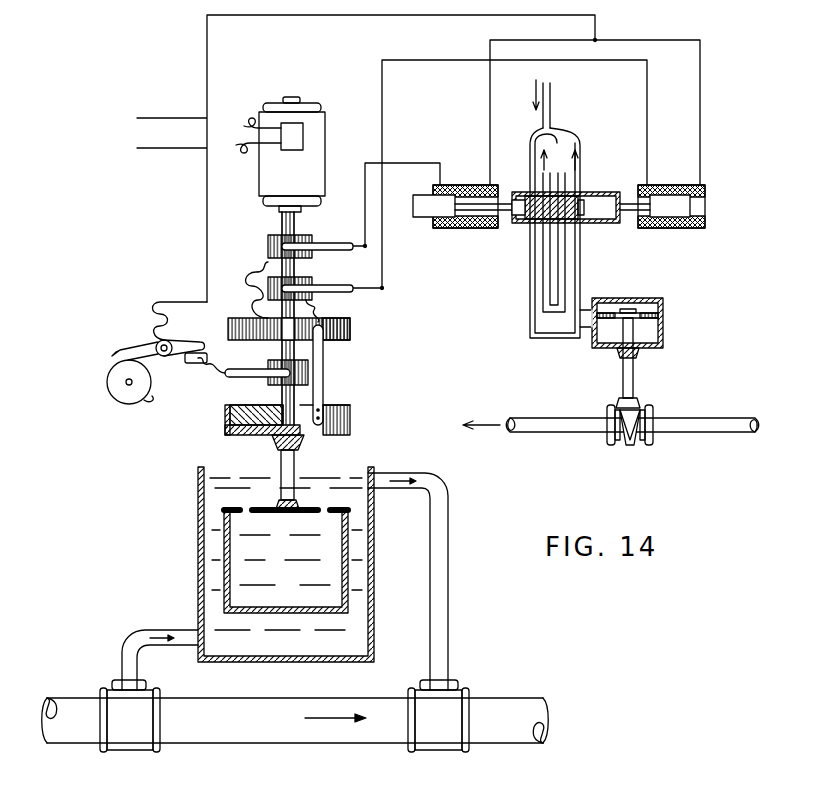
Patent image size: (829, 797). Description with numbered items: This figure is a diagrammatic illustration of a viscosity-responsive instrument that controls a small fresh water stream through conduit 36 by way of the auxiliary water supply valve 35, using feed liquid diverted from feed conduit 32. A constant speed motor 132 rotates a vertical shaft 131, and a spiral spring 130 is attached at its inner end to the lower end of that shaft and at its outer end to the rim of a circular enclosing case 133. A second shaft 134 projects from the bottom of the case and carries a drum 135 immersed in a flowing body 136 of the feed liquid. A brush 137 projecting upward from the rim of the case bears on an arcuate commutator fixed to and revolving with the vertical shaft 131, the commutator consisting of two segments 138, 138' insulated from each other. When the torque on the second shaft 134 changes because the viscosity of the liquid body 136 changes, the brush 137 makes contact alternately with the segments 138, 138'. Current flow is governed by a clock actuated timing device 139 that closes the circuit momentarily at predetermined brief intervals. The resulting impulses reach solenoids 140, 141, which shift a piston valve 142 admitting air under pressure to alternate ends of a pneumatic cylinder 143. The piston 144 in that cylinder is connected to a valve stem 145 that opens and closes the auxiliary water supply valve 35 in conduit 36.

The feed conduit 32 is at (295, 725).
The auxiliary water supply valve 35 is at (626, 446).
The conduit 36 is at (740, 420).
The spiral spring 130 is at (245, 406).
The vertical shaft 131 is at (294, 232).
The constant speed motor 132 is at (318, 172).
The circular enclosing case 133 is at (225, 427).
The second shaft 134 is at (296, 466).
The drum 135 is at (348, 572).
The flowing body of feed liquid 136 is at (212, 492).
The brush 137 is at (323, 367).
The commutator segment 138 is at (271, 329).
The commutator segment 138' is at (359, 329).
The clock actuated timing device 139 is at (134, 342).
The solenoid 140 is at (478, 186).
The solenoid 141 is at (678, 186).
The piston valve 142 is at (512, 222).
The pneumatic cylinder 143 is at (636, 298).
The piston 144 is at (665, 328).
The valve stem 145 is at (634, 384).